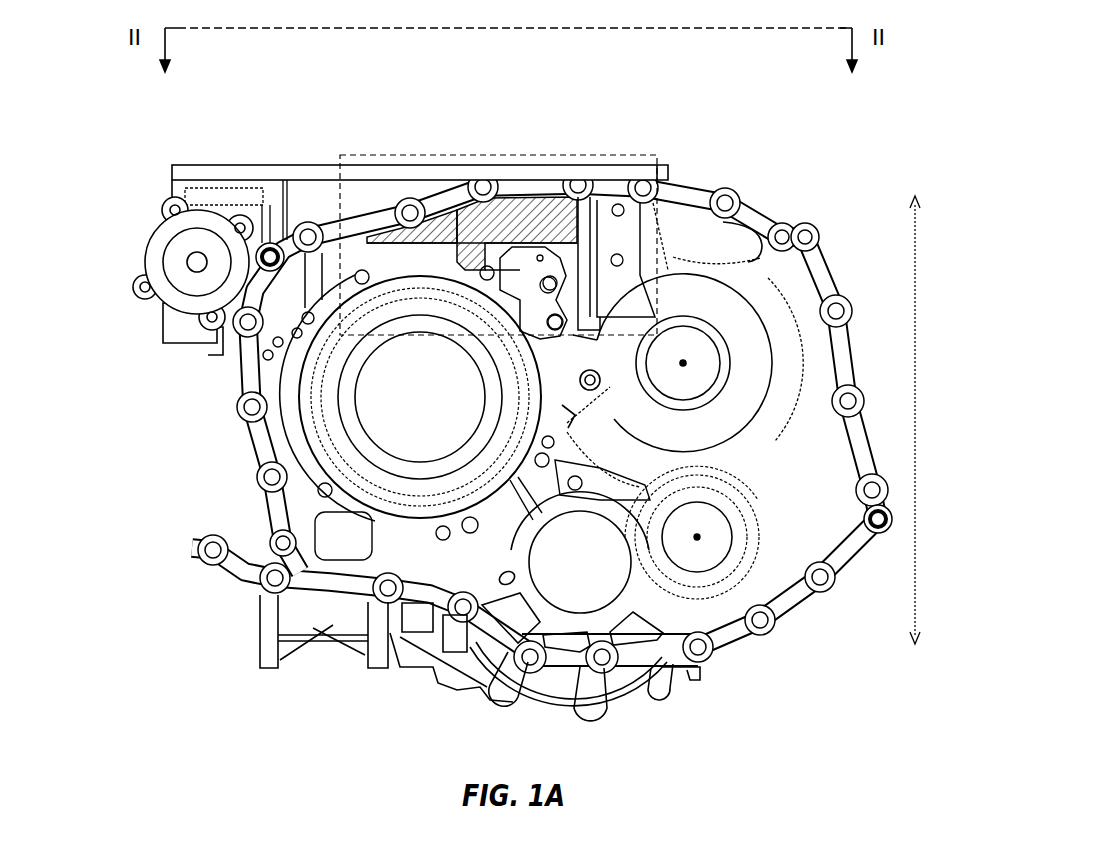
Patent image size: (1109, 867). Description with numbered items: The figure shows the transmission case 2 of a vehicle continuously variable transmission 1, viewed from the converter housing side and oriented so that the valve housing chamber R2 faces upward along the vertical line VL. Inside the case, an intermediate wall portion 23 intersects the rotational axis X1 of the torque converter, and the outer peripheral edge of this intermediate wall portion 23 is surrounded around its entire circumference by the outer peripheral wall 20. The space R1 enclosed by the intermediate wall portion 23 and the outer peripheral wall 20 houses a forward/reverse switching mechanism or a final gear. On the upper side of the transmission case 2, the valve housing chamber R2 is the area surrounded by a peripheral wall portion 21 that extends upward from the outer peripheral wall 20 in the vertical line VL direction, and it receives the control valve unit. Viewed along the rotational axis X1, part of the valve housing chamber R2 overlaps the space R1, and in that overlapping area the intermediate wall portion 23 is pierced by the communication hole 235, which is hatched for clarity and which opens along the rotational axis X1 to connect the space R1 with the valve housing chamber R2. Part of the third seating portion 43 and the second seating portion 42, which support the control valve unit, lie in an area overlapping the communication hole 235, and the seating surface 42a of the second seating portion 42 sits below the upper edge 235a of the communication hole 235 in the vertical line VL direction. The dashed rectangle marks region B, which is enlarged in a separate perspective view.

The continuously variable transmission 1 is at (180, 598).
The transmission case 2 is at (245, 442).
The outer peripheral wall 20 is at (235, 360).
The peripheral wall portion 21 is at (165, 186).
The intermediate wall portion 23 is at (822, 548).
The second seating portion 42 is at (512, 240).
The seating surface 42a is at (606, 198).
The third seating portion 43 is at (432, 222).
The communication hole 235 is at (383, 238).
The upper edge 235a is at (540, 235).
The space R1 is at (845, 497).
The valve housing chamber R2 is at (305, 192).
The rotational axis X1 is at (426, 397).
The region B is at (498, 233).
The vertical line VL is at (923, 426).